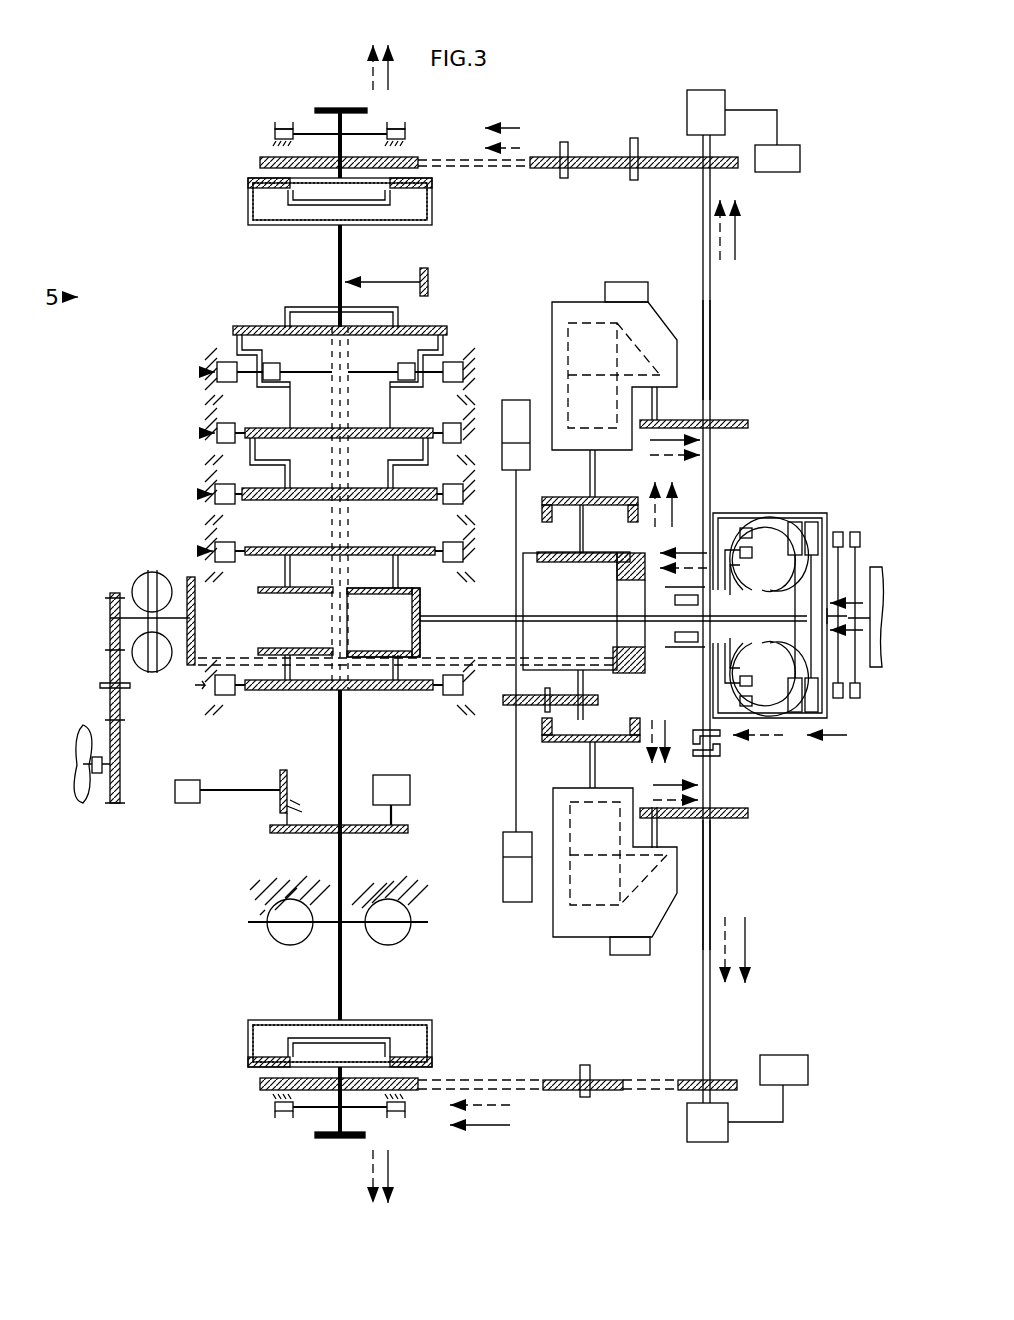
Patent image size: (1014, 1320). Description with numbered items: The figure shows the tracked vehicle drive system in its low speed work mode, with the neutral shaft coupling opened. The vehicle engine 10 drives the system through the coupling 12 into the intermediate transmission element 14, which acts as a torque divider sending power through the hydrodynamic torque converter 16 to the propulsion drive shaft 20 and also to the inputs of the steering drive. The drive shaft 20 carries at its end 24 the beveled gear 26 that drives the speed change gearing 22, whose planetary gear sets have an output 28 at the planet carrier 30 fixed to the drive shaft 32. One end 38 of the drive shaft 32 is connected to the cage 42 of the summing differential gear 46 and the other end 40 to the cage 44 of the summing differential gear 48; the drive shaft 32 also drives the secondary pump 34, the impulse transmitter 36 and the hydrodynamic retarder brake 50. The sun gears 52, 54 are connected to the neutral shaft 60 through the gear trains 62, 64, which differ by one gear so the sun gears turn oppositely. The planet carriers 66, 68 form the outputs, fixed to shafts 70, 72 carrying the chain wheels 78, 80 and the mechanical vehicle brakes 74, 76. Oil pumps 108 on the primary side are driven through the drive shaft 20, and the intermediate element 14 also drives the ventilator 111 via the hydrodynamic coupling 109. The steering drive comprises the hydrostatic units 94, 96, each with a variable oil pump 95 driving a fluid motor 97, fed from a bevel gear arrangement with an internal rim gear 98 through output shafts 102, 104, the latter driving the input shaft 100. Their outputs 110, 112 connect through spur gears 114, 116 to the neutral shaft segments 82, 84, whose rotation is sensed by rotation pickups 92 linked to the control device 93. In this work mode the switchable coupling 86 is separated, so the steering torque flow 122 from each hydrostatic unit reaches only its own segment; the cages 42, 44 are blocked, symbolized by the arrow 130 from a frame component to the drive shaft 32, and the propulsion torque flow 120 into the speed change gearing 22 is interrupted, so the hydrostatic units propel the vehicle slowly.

The vehicle engine 10 is at (872, 567).
The coupling 12 is at (837, 533).
The intermediate transmission element 14 is at (782, 523).
The hydrodynamic torque converter 16 is at (748, 513).
The propulsion drive shaft 20 is at (558, 607).
The speed change gearing 22 is at (371, 496).
The end of the drive shaft 24 is at (420, 600).
The beveled gear 26 is at (418, 622).
The output 28 is at (335, 318).
The planet carrier 30 is at (285, 307).
The drive shaft 32 is at (342, 252).
The secondary pump 34 is at (391, 775).
The impulse transmitter 36 is at (188, 803).
The end of the drive shaft 38 is at (336, 234).
The end of the drive shaft 40 is at (342, 996).
The cage 42 is at (251, 187).
The cage 44 is at (248, 1040).
The summing differential gear 46 is at (424, 202).
The summing differential gear 48 is at (423, 1034).
The hydrodynamic retarder brake 50 is at (407, 932).
The sun gear 52 is at (292, 158).
The sun gear 54 is at (335, 1090).
The neutral shaft 60 is at (710, 270).
The gear train 62 is at (577, 157).
The gear train 64 is at (560, 1090).
The planet carrier 66 is at (253, 200).
The planet carrier 68 is at (297, 1024).
The shaft 70 is at (327, 110).
The shaft 72 is at (350, 1110).
The mechanical vehicle brake 74 is at (406, 130).
The mechanical vehicle brake 76 is at (278, 1115).
The chain wheel 78 is at (339, 108).
The chain wheel 80 is at (336, 1140).
The neutral shaft segment 82 is at (710, 341).
The neutral shaft segment 84 is at (710, 879).
The switchable coupling 86 is at (714, 757).
The rotation pickup 92 is at (688, 102).
The control device 93 is at (778, 172).
The hydrostatic unit 94 is at (577, 304).
The variable oil pump 95 is at (580, 454).
The hydrostatic unit 96 is at (558, 937).
The fluid motor 97 is at (625, 330).
The upper gear 98 is at (600, 485).
The input shaft 100 is at (590, 762).
The output shaft 102 is at (596, 539).
The output shaft 104 is at (588, 712).
The oil pumps 108 is at (516, 400).
The hydrodynamic coupling 109 is at (128, 588).
The output 110 is at (675, 368).
The ventilator 111 is at (90, 790).
The output 112 is at (658, 855).
The spur gear 114 is at (740, 420).
The spur gear 116 is at (748, 812).
The propulsion drive torque flow 120 is at (388, 94).
The steering drive torque flow 122 is at (370, 85).
The blocking arrow 130 is at (428, 283).